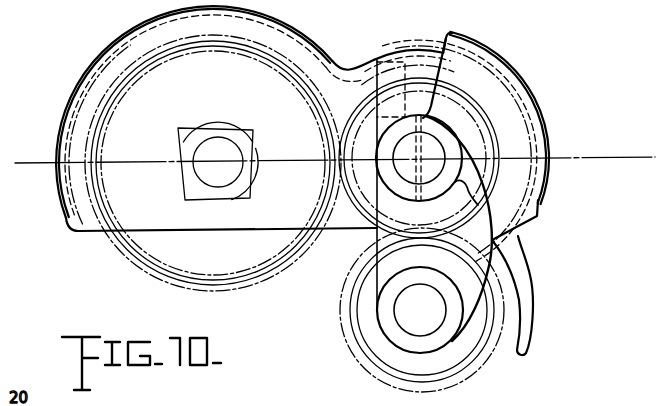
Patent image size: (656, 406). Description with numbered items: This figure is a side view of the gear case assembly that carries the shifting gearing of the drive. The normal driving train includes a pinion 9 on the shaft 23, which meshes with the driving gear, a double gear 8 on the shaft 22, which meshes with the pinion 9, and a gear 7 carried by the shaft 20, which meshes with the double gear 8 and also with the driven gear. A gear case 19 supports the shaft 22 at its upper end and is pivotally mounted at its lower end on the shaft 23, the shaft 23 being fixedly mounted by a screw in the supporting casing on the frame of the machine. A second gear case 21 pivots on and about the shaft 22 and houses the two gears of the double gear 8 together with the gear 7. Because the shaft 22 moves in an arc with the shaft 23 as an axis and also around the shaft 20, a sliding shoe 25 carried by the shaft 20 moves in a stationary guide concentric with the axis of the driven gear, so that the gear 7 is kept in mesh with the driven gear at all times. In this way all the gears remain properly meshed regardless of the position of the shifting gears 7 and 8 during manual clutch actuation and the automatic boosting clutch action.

The gear 7 is at (133, 265).
The double gear 8 is at (493, 148).
The pinion 9 is at (32, 165).
The gear case 19 is at (532, 92).
The shaft 20 is at (221, 151).
The gear case 21 is at (107, 44).
The shaft 22 is at (410, 180).
The shaft 23 is at (413, 325).
The sliding shoe 25 is at (253, 133).